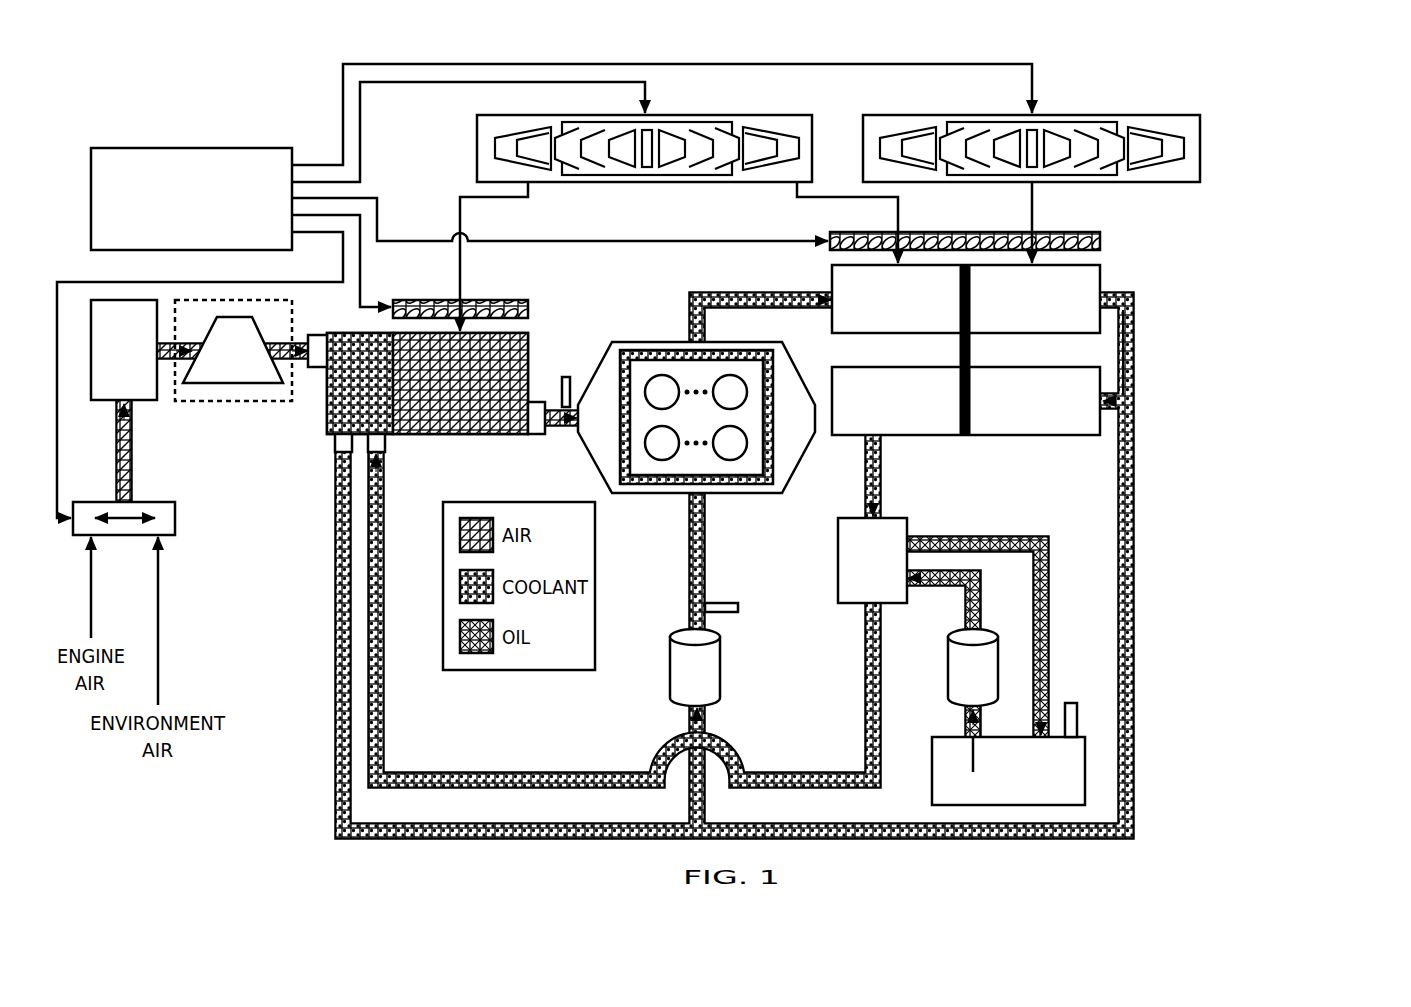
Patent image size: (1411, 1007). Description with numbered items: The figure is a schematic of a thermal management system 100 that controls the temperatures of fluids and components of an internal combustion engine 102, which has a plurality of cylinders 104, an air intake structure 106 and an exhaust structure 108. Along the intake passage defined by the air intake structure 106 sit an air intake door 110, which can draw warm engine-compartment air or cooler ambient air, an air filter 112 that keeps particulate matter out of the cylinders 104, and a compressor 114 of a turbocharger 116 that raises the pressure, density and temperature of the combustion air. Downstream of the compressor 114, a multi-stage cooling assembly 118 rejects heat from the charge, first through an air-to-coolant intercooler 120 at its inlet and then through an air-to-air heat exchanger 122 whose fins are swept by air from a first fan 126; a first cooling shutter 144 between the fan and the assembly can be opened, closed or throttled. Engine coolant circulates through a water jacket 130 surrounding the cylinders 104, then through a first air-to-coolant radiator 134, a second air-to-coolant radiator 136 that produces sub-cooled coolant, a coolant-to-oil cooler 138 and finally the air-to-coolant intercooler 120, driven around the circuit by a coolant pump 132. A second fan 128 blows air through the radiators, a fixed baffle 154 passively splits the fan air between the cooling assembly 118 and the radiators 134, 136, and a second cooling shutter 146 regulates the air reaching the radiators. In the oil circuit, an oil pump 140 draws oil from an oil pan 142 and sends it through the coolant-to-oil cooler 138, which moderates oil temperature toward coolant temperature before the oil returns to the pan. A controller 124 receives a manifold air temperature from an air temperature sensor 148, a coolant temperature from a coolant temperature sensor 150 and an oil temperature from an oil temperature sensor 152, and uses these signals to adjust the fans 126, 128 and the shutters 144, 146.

The thermal management system 100 is at (1334, 82).
The internal combustion engine 102 is at (627, 317).
The plurality of cylinders 104 is at (657, 426).
The air intake structure 106 is at (251, 443).
The exhaust structure 108 is at (818, 454).
The air intake door 110 is at (158, 502).
The air filter 112 is at (124, 350).
The compressor 114 is at (233, 350).
The turbocharger 116 is at (222, 401).
The multi-stage cooling assembly 118 is at (426, 411).
The air-to-coolant intercooler 120 is at (360, 383).
The air-to-air heat exchanger 122 is at (460, 383).
The controller 124 is at (544, 291).
The first fan 126 is at (738, 113).
The second fan 128 is at (1125, 113).
The water jacket 130 is at (730, 484).
The coolant pump 132 is at (695, 667).
The first air-to-coolant radiator 134 is at (966, 299).
The second air-to-coolant radiator 136 is at (966, 401).
The coolant-to-oil cooler 138 is at (872, 560).
The oil pump 140 is at (973, 667).
The oil pan 142 is at (1008, 771).
The first cooling shutter 144 is at (513, 300).
The second cooling shutter 146 is at (1068, 231).
The air temperature sensor 148 is at (566, 377).
The coolant temperature sensor 150 is at (738, 604).
The oil temperature sensor 152 is at (1071, 703).
The fixed baffle 154 is at (972, 351).